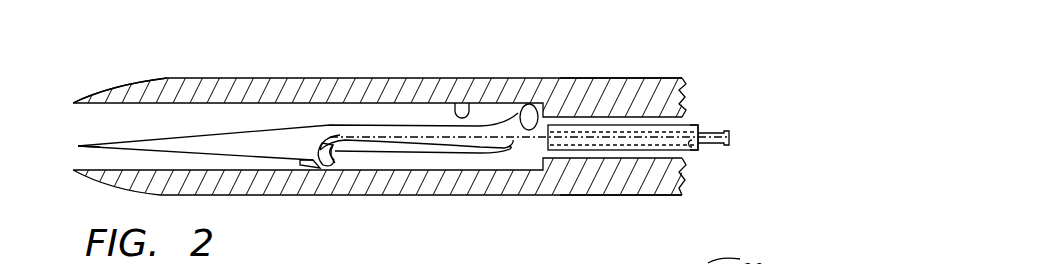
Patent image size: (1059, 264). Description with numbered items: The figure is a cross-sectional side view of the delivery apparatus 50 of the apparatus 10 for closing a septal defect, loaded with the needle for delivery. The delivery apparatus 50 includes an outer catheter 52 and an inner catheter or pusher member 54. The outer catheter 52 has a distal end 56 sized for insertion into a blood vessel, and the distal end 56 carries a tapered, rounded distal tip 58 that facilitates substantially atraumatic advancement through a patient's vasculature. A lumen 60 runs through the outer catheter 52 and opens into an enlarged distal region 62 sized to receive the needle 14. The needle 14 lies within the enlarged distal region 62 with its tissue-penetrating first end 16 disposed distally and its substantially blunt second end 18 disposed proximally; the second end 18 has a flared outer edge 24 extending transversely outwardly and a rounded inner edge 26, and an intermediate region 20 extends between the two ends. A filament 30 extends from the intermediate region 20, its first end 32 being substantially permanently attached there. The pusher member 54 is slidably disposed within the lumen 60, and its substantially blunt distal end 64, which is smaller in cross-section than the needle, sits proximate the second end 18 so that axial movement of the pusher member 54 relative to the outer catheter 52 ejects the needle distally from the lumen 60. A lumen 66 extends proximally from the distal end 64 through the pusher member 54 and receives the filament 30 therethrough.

The apparatus 10 is at (197, 55).
The elongate needle 14 is at (337, 125).
The first end 16 is at (97, 147).
The second end 18 is at (480, 150).
The intermediate region 20 is at (313, 162).
The flared outer edge 24 is at (520, 106).
The rounded inner edge 26 is at (513, 147).
The filament 30 is at (712, 146).
The first end of the filament 32 is at (350, 163).
The delivery apparatus 50 is at (610, 78).
The outer catheter 52 is at (647, 78).
The pusher member 54 is at (691, 120).
The distal end 56 is at (393, 78).
The distal tip 58 is at (93, 100).
The lumen 60 is at (636, 180).
The enlarged distal region 62 is at (460, 103).
The distal end of the pusher member 64 is at (600, 152).
The lumen of the pusher member 66 is at (690, 148).